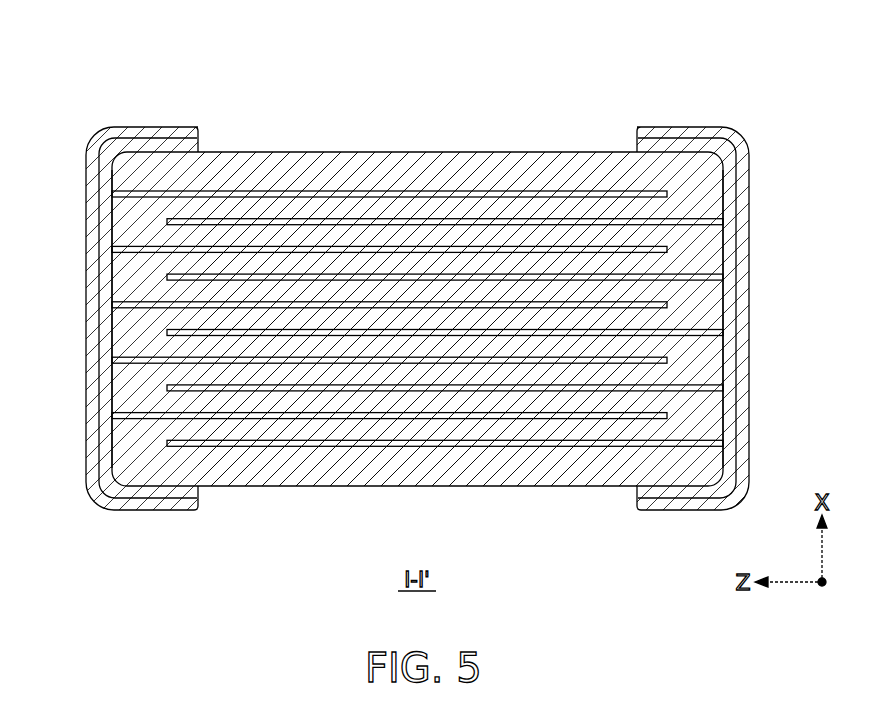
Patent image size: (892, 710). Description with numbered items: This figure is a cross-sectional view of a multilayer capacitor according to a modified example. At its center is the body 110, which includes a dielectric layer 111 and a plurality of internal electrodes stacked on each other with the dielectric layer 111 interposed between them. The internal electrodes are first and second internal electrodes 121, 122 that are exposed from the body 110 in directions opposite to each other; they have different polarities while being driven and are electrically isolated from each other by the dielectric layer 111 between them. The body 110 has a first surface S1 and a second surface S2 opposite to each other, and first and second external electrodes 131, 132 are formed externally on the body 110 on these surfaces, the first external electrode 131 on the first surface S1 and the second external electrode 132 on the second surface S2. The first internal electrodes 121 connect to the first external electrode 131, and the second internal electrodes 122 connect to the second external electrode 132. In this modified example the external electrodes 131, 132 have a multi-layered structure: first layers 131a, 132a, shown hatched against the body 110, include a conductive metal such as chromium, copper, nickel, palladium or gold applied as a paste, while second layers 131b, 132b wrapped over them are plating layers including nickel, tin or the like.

The body 110 is at (284, 146).
The dielectric layer 111 is at (192, 234).
The first internal electrode 121 is at (425, 191).
The second internal electrode 122 is at (500, 218).
The first external electrode 131 is at (402, 266).
The first layer 131a is at (193, 58).
The second layer 131b is at (175, 133).
The second external electrode 132 is at (433, 266).
The first layer 132a is at (641, 58).
The second layer 132b is at (660, 133).
The first surface S1 is at (102, 212).
The second surface S2 is at (736, 196).